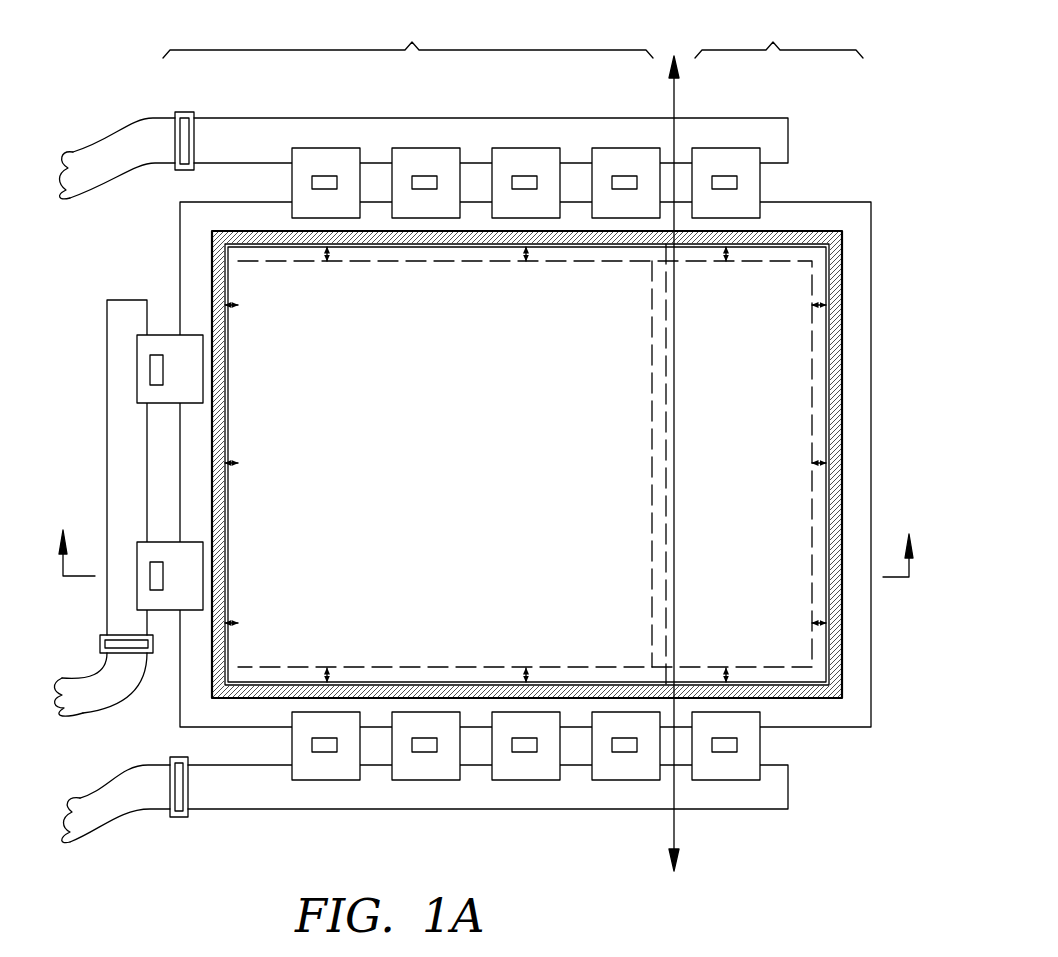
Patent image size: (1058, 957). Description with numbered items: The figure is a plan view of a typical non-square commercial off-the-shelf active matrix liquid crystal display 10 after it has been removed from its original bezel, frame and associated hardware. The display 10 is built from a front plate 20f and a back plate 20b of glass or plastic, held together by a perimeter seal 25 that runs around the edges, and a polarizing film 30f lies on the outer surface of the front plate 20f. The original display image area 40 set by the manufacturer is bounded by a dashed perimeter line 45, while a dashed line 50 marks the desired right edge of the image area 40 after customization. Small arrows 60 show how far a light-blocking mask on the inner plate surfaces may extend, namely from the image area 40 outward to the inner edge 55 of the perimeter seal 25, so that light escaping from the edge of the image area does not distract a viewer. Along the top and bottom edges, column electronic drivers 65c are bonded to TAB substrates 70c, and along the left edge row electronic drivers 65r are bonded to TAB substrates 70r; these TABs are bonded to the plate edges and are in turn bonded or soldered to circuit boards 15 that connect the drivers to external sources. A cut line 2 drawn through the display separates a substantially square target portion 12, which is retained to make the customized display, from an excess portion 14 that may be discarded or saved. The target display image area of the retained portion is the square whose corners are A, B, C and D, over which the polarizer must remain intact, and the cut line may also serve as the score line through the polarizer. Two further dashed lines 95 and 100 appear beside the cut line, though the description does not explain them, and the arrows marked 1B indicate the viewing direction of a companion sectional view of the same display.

The COTS AMLCD display 10 is at (488, 469).
The target portion 12 is at (408, 35).
The excess portion 14 is at (779, 35).
The circuit boards 15 is at (788, 137).
The front plate 20f is at (843, 231).
The back plate 20b is at (857, 300).
The perimeter seal 25 is at (232, 237).
The front polarizing film 30f is at (830, 268).
The original display image area 40 is at (783, 427).
The dashed perimeter line 45 is at (812, 333).
The dashed line (desired right edge) 50 is at (651, 357).
The inner edge of perimeter seal 55 is at (829, 366).
The arrows 60 is at (230, 305).
The column electronic drivers 65c is at (324, 182).
The column TAB substrates 70c is at (520, 468).
The row electronic drivers 65r is at (156, 370).
The row TAB substrates 70r is at (128, 472).
The boundary line 95 is at (666, 327).
The boundary line 100 is at (672, 460).
The cut line 2 is at (672, 463).
The section line 1B- 1B is at (488, 536).
The corner of target image area square A is at (238, 422).
The corner of target image area square B is at (422, 262).
The corner of target image area square C is at (652, 428).
The corner of target image area square D is at (440, 666).